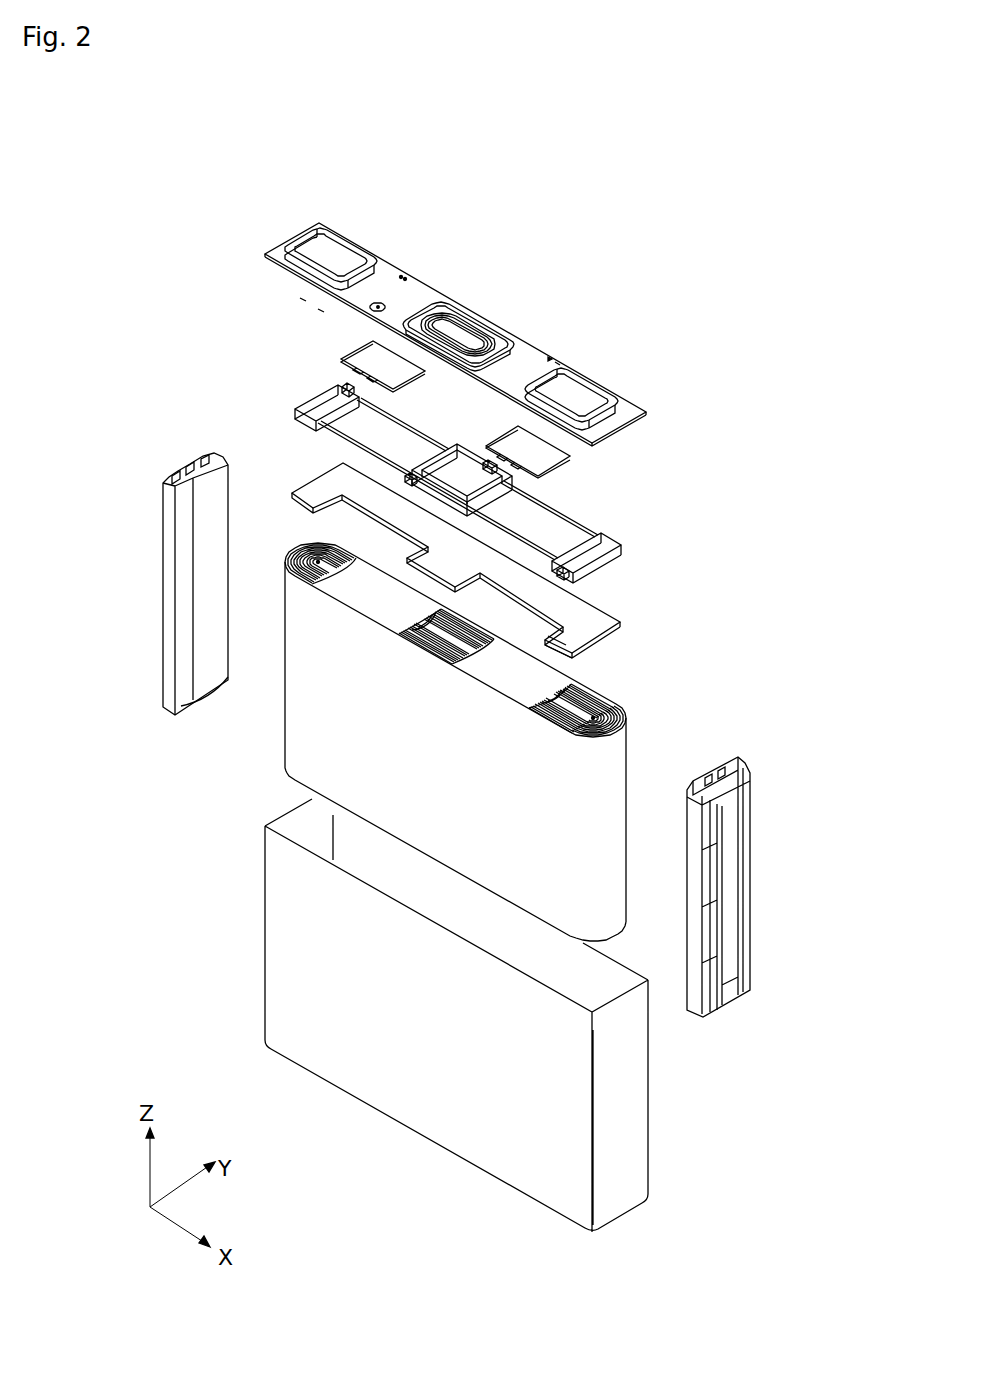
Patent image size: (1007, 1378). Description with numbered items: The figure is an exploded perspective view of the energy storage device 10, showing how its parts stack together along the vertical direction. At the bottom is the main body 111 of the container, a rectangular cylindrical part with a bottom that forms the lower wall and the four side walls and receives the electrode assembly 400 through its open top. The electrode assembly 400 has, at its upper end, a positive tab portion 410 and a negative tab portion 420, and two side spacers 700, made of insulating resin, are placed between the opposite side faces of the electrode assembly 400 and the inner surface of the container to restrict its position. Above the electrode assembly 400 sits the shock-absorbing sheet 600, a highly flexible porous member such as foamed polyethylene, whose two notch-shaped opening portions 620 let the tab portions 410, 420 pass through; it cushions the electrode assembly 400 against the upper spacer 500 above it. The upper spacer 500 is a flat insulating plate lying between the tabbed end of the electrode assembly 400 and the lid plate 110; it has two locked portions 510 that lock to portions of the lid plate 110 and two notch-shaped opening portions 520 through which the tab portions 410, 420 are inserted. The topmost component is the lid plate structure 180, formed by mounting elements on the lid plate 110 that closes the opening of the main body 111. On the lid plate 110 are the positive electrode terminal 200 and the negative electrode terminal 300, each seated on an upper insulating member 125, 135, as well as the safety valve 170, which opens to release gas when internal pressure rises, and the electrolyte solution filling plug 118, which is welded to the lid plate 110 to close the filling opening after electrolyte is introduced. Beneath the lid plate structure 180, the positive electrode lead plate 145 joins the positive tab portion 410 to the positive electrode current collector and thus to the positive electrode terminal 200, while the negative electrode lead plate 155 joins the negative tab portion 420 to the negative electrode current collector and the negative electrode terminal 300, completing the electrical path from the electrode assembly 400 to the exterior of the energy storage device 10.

The energy storage device 10 is at (690, 212).
The lid plate 110 is at (640, 408).
The main body 111 is at (263, 922).
The electrolyte solution filling plug 118 is at (390, 303).
The upper insulating member 125 is at (382, 268).
The upper insulating member 135 is at (567, 367).
The positive electrode lead plate 145 is at (365, 357).
The negative electrode lead plate 155 is at (570, 462).
The safety valve 170 is at (453, 335).
The lid plate structure 180 is at (646, 432).
The positive electrode terminal 200 is at (338, 248).
The negative electrode terminal 300 is at (595, 393).
The electrode assembly 400 is at (494, 699).
The positive tab portion 410 is at (383, 587).
The negative tab portion 420 is at (540, 672).
The upper spacer 500 is at (493, 470).
The locked portion 510 is at (350, 400).
The opening portion 520 is at (330, 432).
The shock-absorbing sheet 600 is at (467, 513).
The opening portion 620 is at (335, 470).
The side spacer 700 is at (205, 465).